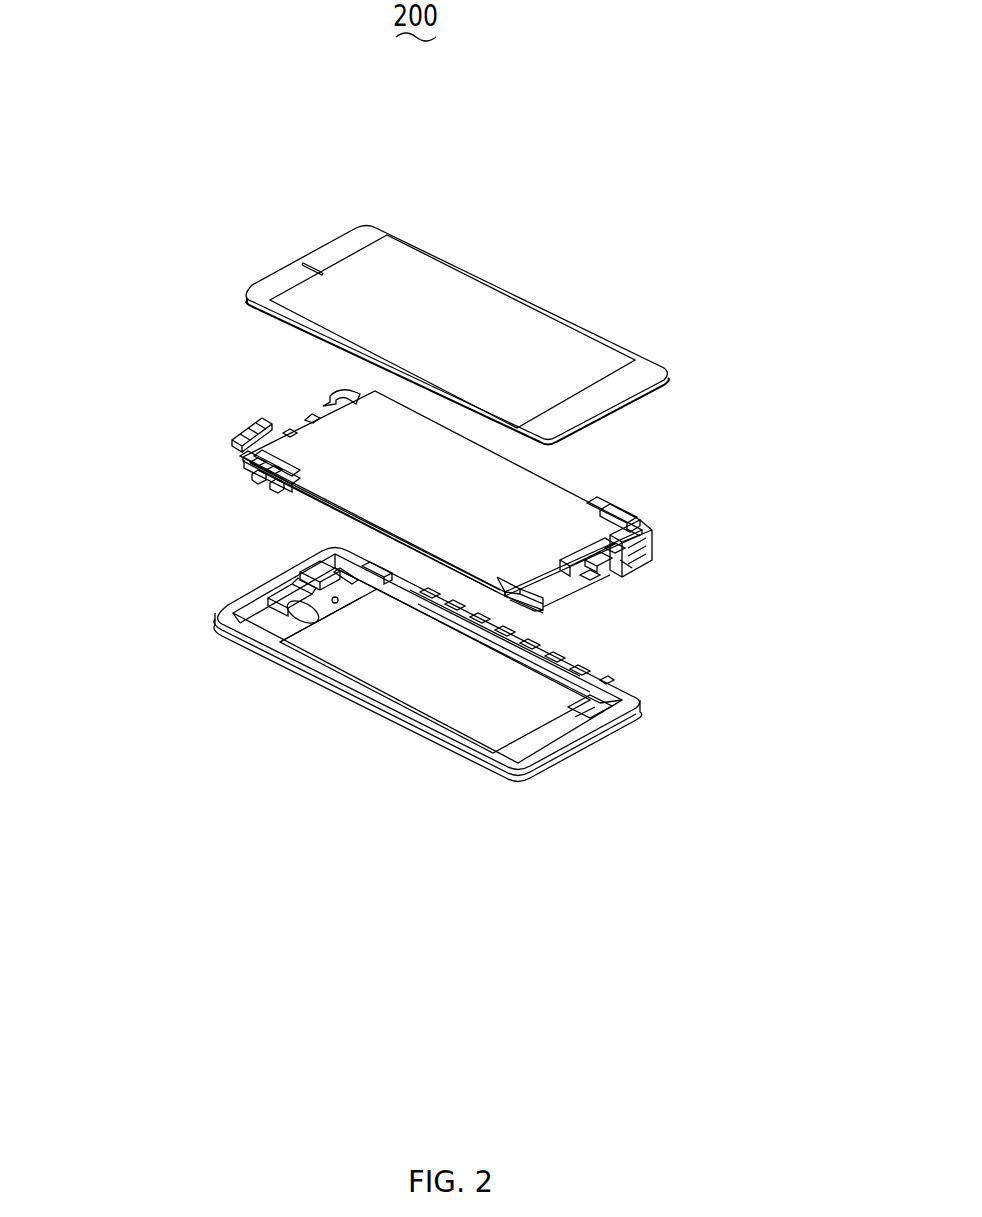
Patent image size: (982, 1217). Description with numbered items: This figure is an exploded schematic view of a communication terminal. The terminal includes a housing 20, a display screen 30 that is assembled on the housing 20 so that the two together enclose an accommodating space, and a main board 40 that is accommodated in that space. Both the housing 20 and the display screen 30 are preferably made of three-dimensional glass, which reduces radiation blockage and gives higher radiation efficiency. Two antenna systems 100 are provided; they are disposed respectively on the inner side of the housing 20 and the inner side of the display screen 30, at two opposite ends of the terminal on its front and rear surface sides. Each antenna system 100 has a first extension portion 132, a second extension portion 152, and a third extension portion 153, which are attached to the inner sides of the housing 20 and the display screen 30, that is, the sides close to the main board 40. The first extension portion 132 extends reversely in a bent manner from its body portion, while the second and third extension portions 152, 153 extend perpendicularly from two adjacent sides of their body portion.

The housing 20 is at (382, 670).
The display screen 30 is at (487, 310).
The main board 40 is at (522, 493).
The antenna system 100 is at (220, 445).
The first extension portion 132 is at (280, 463).
The second extension portion 152 is at (263, 477).
The third extension portion 153 is at (247, 427).